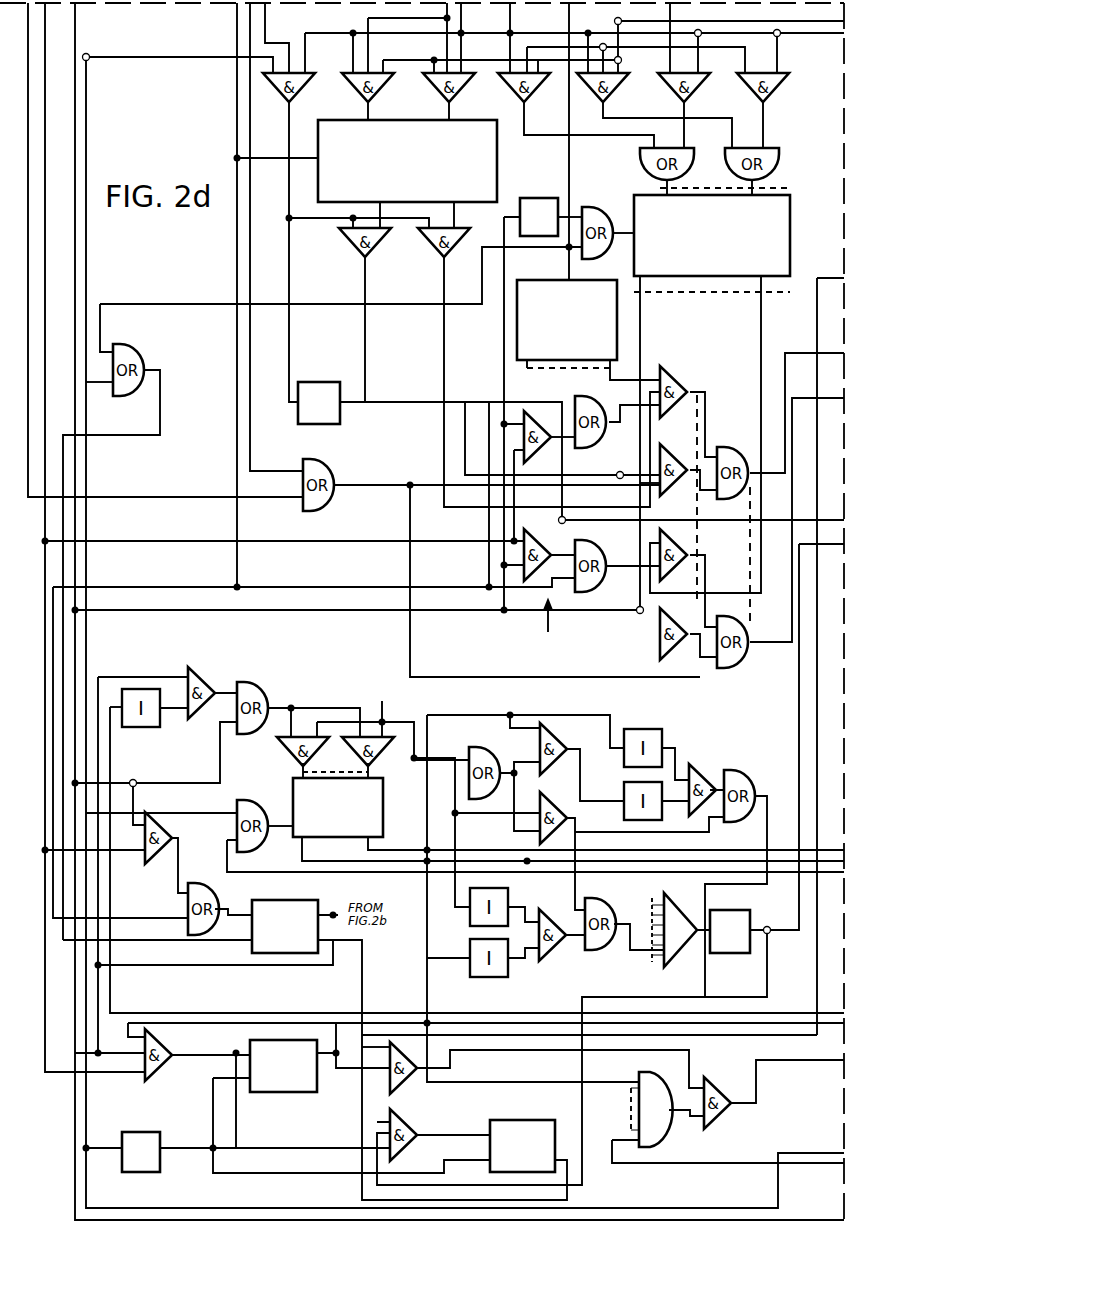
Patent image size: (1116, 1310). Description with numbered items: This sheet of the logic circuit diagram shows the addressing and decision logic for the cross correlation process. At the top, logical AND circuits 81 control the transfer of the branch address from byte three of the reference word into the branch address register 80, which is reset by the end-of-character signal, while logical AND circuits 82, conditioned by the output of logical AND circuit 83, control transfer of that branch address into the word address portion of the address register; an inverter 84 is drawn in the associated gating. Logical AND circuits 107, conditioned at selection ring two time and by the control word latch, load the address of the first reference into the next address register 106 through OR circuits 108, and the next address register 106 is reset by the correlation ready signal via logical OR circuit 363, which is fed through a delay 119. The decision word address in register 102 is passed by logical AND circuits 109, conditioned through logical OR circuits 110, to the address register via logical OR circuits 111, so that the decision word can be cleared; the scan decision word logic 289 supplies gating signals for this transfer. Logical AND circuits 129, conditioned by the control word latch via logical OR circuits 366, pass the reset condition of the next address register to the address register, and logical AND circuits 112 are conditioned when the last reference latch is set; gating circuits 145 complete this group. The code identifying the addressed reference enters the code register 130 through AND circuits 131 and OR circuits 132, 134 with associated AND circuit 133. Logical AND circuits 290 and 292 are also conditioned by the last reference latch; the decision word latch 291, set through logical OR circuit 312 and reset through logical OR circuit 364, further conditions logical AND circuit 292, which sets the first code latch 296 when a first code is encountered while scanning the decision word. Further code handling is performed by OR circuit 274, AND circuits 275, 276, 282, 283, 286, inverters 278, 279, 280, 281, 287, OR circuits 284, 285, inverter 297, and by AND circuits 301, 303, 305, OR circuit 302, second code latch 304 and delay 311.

The branch address register 80 is at (497, 165).
The logical AND circuits 81 is at (403, 91).
The logical AND circuits 82 is at (398, 246).
The logical AND circuit 83 is at (324, 91).
The inverter 84 is at (296, 426).
The register 102 is at (564, 278).
The next address register 106 is at (790, 225).
The logical AND circuits 107 is at (537, 98).
The OR gate 108 is at (690, 172).
The logical AND circuits 109 is at (680, 374).
The logical OR circuits 110 is at (603, 448).
The logical OR circuits 111 is at (746, 443).
The logical AND circuits 112 is at (540, 411).
The delay 119 is at (530, 196).
The logical AND circuits 129 is at (675, 448).
The code register 130 is at (286, 775).
The AND gates 131 is at (325, 752).
The OR gate 132 is at (258, 682).
The AND gate 133 is at (205, 670).
The OR gate 134 is at (256, 792).
The AND gate 145 is at (700, 94).
The OR gate 274 is at (480, 800).
The AND gate 275 is at (553, 800).
The AND gate 276 is at (565, 737).
The inverter 278 is at (470, 921).
The inverter 279 is at (620, 822).
The inverter 280 is at (509, 975).
The inverter 281 is at (662, 733).
The AND gate 282 is at (553, 904).
The AND gate 283 is at (695, 764).
The OR gate 284 is at (598, 898).
The OR gate 285 is at (752, 775).
The AND gate 286 is at (672, 900).
The inverter 287 is at (750, 912).
The scan decision word logic 289 is at (551, 627).
The logical AND circuit 290 is at (162, 818).
The decision word latch 291 is at (252, 955).
The logical AND circuit 292 is at (165, 1040).
The first code latch 296 is at (317, 1092).
The inverter 297 is at (141, 728).
The AND gate 301 is at (712, 1125).
The OR gate 302 is at (660, 1145).
The AND gate 303 is at (398, 1090).
The second code latch 304 is at (490, 1122).
The AND gate 305 is at (402, 1155).
The delay 311 is at (162, 1134).
The logical OR circuit 312 is at (212, 888).
The logical OR circuit 363 is at (596, 208).
The logical OR circuit 364 is at (128, 397).
The logical OR circuits 366 is at (323, 462).